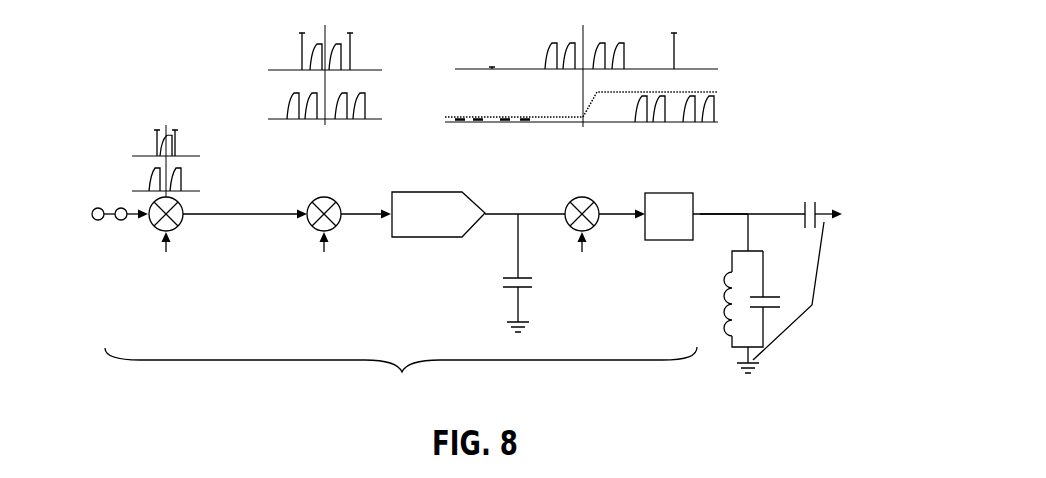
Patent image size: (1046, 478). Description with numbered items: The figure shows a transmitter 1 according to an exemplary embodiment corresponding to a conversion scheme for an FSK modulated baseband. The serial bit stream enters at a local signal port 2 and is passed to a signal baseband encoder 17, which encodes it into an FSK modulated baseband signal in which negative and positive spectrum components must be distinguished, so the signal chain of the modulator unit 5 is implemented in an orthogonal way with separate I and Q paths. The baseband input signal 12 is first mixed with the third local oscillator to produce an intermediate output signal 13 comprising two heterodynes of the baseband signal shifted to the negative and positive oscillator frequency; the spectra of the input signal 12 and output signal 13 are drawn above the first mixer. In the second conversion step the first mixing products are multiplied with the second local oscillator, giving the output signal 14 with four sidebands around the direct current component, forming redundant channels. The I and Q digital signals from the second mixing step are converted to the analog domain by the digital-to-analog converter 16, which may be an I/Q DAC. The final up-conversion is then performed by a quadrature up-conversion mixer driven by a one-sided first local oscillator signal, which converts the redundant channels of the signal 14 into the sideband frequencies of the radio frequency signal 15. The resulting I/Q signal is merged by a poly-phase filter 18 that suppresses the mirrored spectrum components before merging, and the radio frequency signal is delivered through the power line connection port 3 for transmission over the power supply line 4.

The transmitter 1 is at (249, 136).
The local signal port 2 is at (97, 221).
The power line connection port 3 is at (713, 194).
The power supply line 4 is at (790, 291).
The modulator unit 5 is at (401, 380).
The input signal 12 is at (130, 145).
The intermediate output signal 13 is at (130, 175).
The output signal of LO2 mixing step 14 is at (261, 97).
The radio frequency signal 15 is at (447, 97).
The digital-to-analog converter 16 is at (417, 237).
The signal baseband encoder 17 is at (120, 221).
The poly-phase filter 18 is at (667, 240).